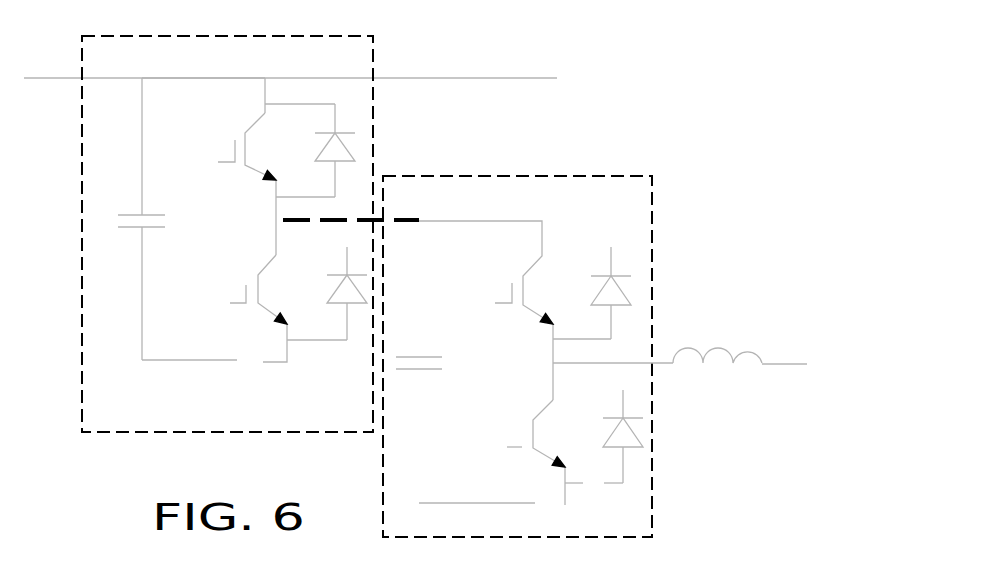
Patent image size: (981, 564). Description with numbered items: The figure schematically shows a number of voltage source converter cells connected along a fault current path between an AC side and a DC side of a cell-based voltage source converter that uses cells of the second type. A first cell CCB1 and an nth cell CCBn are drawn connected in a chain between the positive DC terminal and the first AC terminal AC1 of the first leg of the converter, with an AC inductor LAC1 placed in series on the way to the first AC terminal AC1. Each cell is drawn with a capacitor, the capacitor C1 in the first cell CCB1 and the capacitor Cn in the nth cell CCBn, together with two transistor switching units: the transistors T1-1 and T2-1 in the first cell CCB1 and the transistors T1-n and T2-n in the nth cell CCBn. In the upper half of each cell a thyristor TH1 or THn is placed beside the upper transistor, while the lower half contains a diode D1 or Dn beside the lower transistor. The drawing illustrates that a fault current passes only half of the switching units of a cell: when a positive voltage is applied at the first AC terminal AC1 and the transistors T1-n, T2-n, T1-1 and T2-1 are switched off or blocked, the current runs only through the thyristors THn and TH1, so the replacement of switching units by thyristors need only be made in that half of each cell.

The first cell CCB1 is at (227, 220).
The nth cell CCBn is at (517, 336).
The capacitor of the first cell C1 is at (177, 219).
The first transistor of the first cell T1-1 is at (238, 166).
The thyristor of the first cell TH1 is at (315, 149).
The second transistor of the first cell T2-1 is at (220, 308).
The diode of the first cell D1 is at (322, 293).
The capacitor of the nth cell Cn is at (442, 364).
The first transistor of the nth cell T1-n is at (486, 310).
The thyristor of the nth cell THn is at (591, 290).
The second transistor of the nth cell T2-n is at (501, 452).
The diode of the nth cell Dn is at (602, 436).
The AC inductor LAC1 is at (657, 335).
The first AC terminal AC1 is at (798, 345).